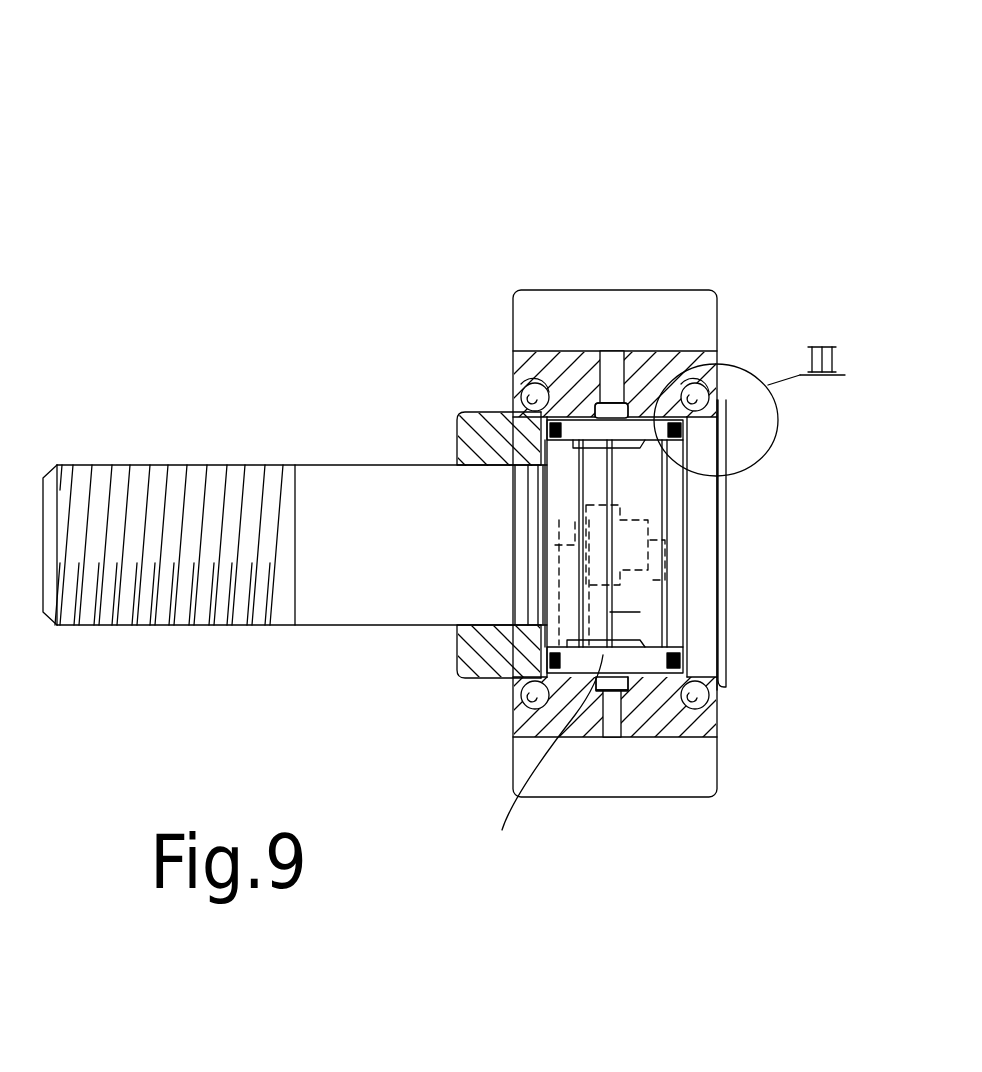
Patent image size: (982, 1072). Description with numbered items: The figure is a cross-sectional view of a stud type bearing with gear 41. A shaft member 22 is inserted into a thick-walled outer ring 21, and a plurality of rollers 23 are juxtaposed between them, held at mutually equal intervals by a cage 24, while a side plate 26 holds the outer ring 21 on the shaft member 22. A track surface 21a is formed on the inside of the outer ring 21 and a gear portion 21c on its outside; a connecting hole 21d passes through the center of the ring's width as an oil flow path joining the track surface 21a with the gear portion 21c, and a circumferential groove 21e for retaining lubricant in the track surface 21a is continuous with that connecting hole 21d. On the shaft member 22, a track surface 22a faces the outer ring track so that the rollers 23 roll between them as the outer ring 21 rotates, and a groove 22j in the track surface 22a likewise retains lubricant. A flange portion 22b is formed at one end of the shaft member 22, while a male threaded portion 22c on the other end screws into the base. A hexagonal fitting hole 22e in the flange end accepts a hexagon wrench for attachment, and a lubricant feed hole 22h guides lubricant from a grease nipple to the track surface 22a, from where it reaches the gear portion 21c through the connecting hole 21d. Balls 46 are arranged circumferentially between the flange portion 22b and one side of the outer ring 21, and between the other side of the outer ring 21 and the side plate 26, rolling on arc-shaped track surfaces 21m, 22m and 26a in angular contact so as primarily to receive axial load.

The stud type bearing with gear 41 is at (262, 148).
The outer ring 21 is at (550, 288).
The track surface 21a is at (594, 400).
The gear portion 21c is at (697, 318).
The connecting hole 21d is at (616, 400).
The groove 21e is at (628, 690).
The track surface 21m is at (520, 385).
The shaft member 22 is at (298, 460).
The track surface 22a is at (612, 450).
The flange portion 22b is at (716, 670).
The male threaded portion 22c is at (175, 627).
The fitting hole 22e is at (700, 578).
The lubricant feed hole 22h is at (590, 660).
The groove 22j is at (640, 612).
The track surface 22m is at (688, 432).
The rollers 23 is at (658, 410).
The cage 24 is at (655, 440).
The side plate 26 is at (455, 657).
The track surface 26a is at (512, 447).
The balls 46 is at (521, 390).